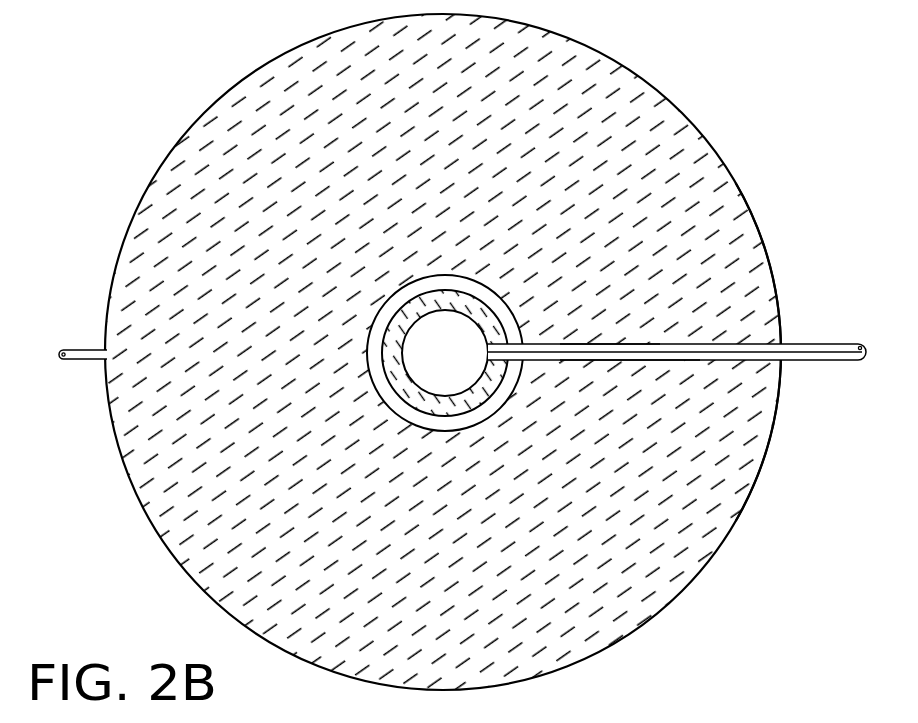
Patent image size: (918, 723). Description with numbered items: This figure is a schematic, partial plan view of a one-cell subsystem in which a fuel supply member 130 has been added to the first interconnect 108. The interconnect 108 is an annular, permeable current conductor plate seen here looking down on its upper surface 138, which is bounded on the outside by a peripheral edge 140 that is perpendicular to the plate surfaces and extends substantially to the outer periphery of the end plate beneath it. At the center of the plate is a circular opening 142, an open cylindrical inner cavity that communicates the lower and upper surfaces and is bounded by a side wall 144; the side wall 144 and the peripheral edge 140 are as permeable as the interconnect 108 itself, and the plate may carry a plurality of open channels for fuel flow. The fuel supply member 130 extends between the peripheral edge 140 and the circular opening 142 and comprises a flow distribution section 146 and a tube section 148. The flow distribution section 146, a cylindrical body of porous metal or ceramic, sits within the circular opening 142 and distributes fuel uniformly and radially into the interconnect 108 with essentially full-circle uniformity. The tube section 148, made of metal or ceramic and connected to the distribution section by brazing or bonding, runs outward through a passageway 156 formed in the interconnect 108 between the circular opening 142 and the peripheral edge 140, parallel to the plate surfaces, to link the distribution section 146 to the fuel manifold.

The first interconnect 108 is at (367, 128).
The upper surface 138 is at (577, 70).
The peripheral edge 140 is at (783, 405).
The circular opening 142 is at (458, 248).
The side wall 144 is at (370, 342).
The flow distribution section 146 is at (468, 364).
The fuel supply member 130 is at (800, 345).
The passageway 156 is at (602, 351).
The tube section 148 is at (635, 362).